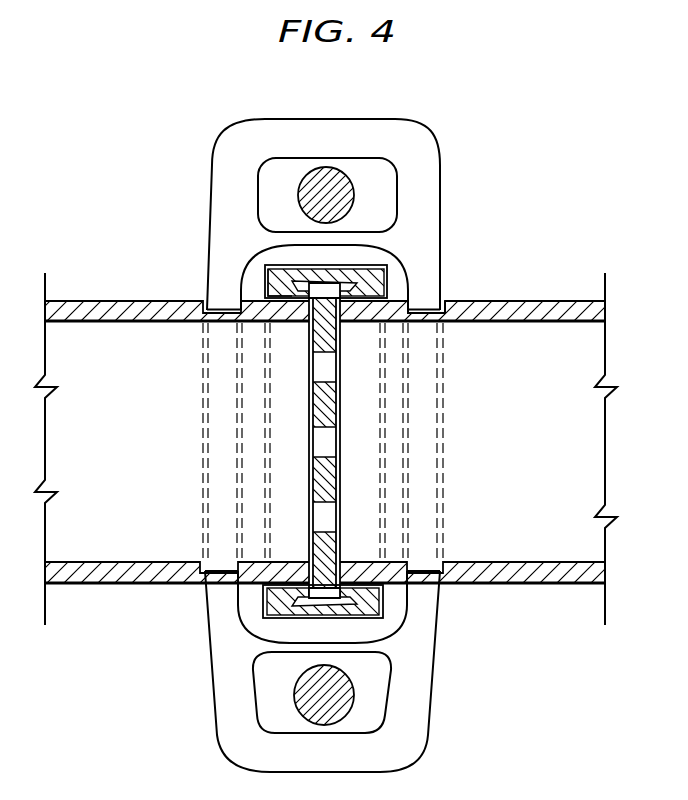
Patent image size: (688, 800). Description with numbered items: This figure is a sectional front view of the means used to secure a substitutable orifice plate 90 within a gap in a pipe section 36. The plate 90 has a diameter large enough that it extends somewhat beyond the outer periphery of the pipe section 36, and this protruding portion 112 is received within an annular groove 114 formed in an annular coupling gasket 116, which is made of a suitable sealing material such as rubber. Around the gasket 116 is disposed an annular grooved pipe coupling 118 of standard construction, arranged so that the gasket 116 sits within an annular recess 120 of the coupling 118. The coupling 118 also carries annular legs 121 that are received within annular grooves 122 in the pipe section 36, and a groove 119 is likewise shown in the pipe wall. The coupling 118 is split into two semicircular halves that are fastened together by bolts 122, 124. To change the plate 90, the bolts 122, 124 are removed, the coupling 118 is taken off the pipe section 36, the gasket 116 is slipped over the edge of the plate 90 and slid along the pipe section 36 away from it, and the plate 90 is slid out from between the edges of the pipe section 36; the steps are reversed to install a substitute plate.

The pipe section 36 is at (148, 584).
The substitutable plate 90 is at (337, 527).
The protruding portion 112 is at (387, 280).
The annular groove 114 is at (322, 282).
The annular coupling gasket 116 is at (268, 283).
The annular grooved pipe coupling 118 is at (432, 180).
The groove 119 is at (443, 303).
The annular recess 120 is at (275, 281).
The annular legs 121 is at (201, 311).
The bolt 122 is at (352, 177).
The bolt 124 is at (352, 708).